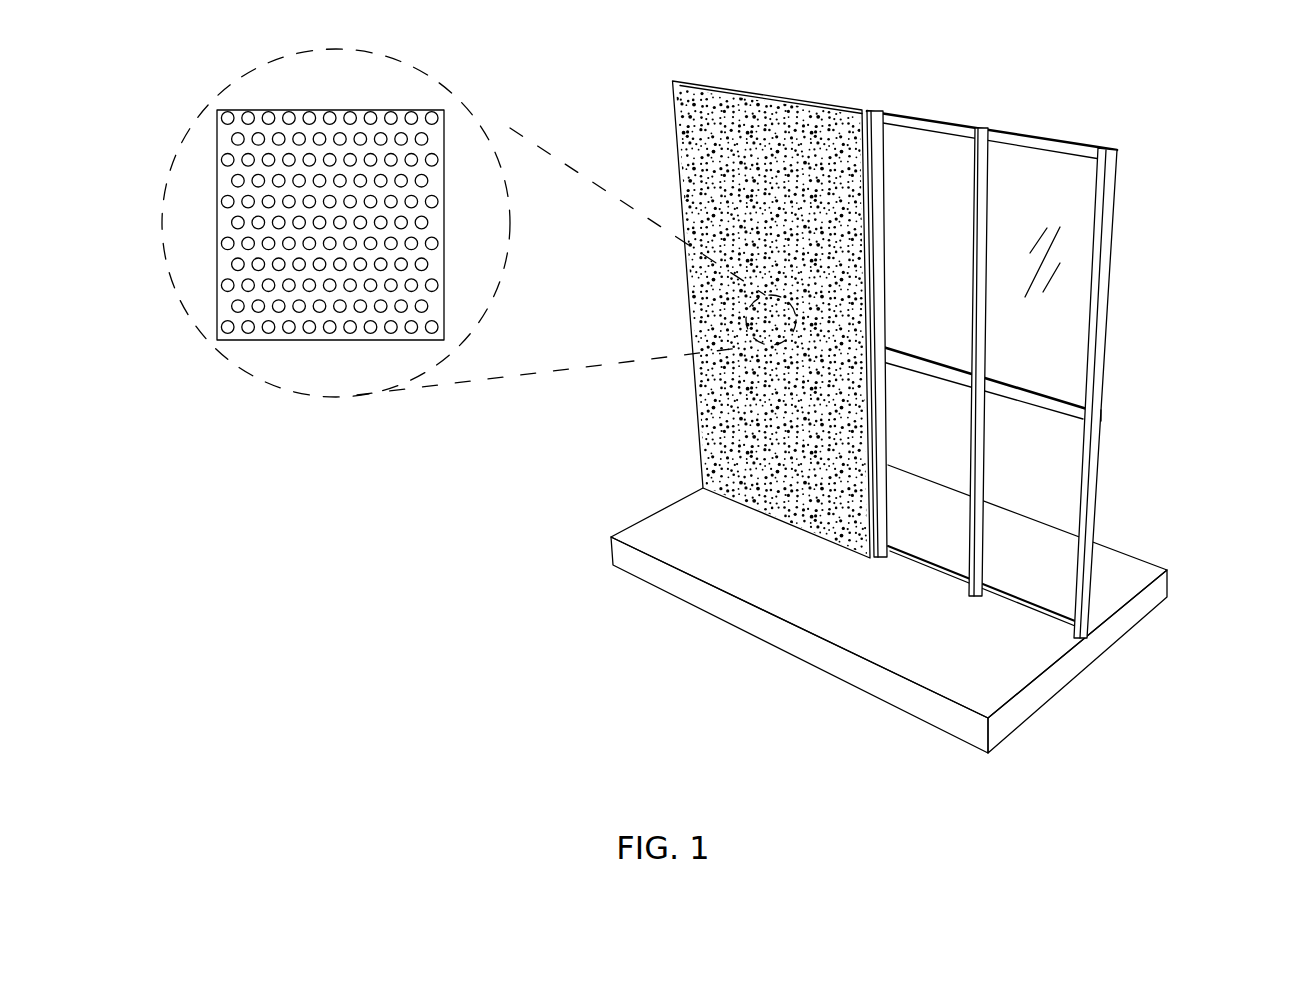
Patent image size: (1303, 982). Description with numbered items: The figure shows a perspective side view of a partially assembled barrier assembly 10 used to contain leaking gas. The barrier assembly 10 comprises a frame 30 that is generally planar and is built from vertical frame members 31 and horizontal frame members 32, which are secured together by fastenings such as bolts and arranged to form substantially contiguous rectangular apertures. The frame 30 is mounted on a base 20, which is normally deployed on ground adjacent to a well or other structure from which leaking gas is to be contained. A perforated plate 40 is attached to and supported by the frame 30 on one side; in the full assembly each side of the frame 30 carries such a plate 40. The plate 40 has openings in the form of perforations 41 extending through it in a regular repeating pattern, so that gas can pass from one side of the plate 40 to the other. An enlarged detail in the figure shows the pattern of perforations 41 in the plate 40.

The barrier assembly 10 is at (1040, 72).
The base 20 is at (1138, 607).
The frame 30 is at (1108, 202).
The vertical frame member 31 is at (1090, 453).
The horizontal frame member 32 is at (1060, 147).
The perforated plate 40 is at (698, 122).
The perforations 41 is at (432, 202).